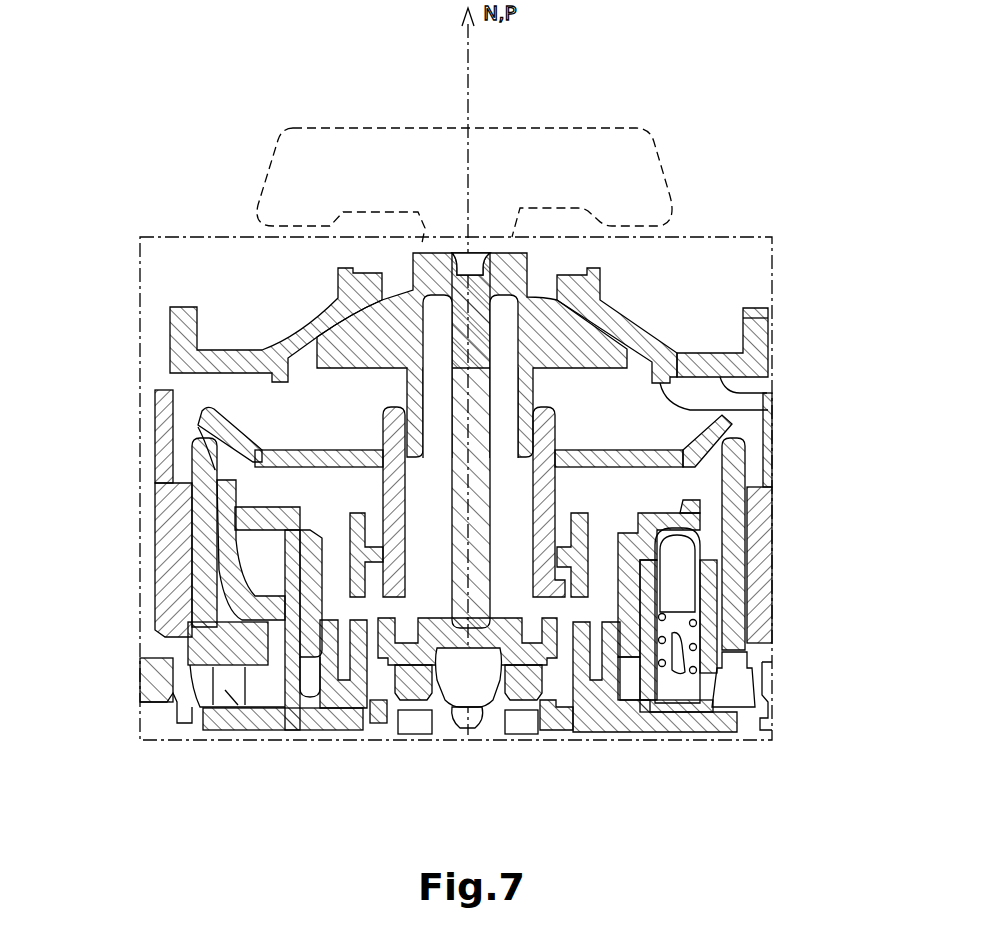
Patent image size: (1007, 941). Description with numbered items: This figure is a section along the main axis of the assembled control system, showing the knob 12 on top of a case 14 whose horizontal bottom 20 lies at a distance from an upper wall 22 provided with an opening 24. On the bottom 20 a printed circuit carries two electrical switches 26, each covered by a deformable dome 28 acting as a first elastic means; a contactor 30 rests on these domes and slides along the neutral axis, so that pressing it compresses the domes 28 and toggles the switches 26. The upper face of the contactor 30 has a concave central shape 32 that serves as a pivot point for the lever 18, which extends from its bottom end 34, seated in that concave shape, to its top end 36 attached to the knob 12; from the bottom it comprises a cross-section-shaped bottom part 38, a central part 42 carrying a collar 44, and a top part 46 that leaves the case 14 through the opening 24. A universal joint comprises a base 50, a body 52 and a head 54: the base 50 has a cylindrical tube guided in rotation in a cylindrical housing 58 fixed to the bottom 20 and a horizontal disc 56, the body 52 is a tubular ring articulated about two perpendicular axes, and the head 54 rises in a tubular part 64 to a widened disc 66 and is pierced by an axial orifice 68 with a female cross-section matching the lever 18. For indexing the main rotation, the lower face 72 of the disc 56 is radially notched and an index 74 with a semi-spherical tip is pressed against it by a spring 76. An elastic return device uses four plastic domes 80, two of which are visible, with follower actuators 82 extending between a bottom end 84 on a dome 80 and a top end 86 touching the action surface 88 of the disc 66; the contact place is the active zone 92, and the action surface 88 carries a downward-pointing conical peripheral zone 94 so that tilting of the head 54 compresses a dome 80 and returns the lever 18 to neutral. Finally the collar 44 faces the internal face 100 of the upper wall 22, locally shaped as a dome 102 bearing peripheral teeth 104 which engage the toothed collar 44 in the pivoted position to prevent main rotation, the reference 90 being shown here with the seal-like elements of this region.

The knob 12 is at (512, 117).
The case 14 is at (755, 360).
The lever 18 is at (467, 370).
The bottom 20 is at (382, 727).
The upper wall 22 is at (205, 378).
The opening 24 is at (560, 252).
The electrical switch 26 is at (528, 728).
The deformable dome 28 is at (493, 680).
The contactor 30 is at (560, 640).
The concave central shape 32 is at (497, 622).
The bottom end 34 is at (465, 648).
The top end 36 is at (405, 298).
The bottom part 38 is at (748, 506).
The central part 42 is at (457, 337).
The collar 44 is at (296, 330).
The top part 46 is at (437, 200).
The base 50 is at (255, 590).
The body 52 is at (275, 548).
The head 54 is at (385, 492).
The disc 56 is at (700, 520).
The cylindrical housing 58 is at (307, 677).
The tubular part 64 is at (230, 638).
The disc 66 is at (288, 452).
The axial orifice 68 is at (365, 535).
The lower face 72 is at (673, 585).
The index 74 is at (700, 615).
The spring 76 is at (690, 652).
The deformable domes 80 is at (228, 692).
The follower actuator 82 is at (200, 660).
The bottom end 84 is at (197, 705).
The top end 86 is at (200, 440).
The action surface 88 is at (64, 478).
The seal lip 90 is at (220, 472).
The active zone 92 is at (175, 418).
The conical peripheral zone 94 is at (200, 457).
The internal face 100 is at (720, 378).
The dome 102 is at (745, 322).
The teeth 104 is at (755, 405).